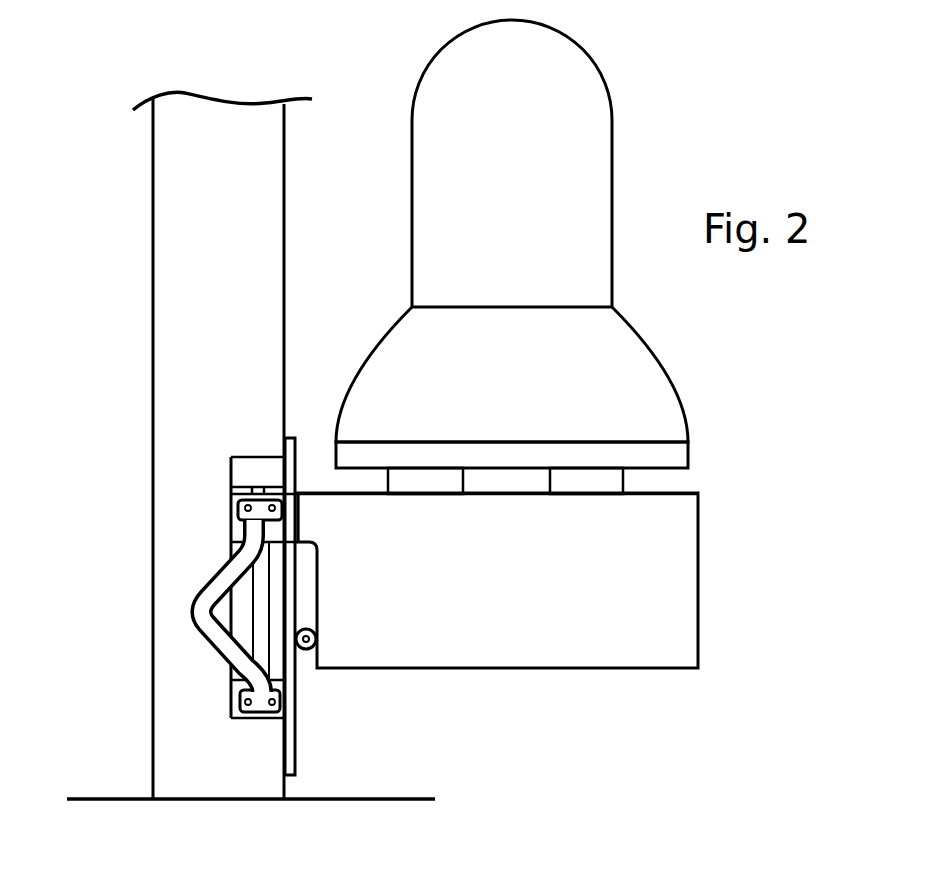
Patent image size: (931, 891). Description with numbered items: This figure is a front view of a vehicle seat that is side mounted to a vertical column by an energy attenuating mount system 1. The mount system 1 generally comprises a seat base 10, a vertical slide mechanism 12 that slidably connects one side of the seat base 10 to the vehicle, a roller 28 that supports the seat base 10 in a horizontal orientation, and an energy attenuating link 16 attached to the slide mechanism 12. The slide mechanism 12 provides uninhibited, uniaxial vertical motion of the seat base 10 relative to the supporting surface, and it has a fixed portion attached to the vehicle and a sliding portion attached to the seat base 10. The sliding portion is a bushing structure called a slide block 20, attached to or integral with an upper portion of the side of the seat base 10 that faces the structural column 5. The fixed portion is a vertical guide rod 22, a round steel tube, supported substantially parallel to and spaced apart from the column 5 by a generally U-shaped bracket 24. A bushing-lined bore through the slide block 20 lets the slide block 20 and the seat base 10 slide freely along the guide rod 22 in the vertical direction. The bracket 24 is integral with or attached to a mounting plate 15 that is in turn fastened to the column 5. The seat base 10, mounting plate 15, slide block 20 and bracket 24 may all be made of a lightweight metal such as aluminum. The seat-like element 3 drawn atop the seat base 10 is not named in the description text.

The mount system 1 is at (420, 397).
The container 3 is at (613, 175).
The structural column 5 is at (166, 212).
The seat base 10 is at (680, 571).
The vertical slide mechanism 12 is at (381, 578).
The mounting plate 15 is at (295, 740).
The energy attenuating link 16 is at (200, 630).
The slide block 20 is at (230, 525).
The vertical guide rod 22 is at (263, 582).
The U-shaped bracket 24 is at (265, 468).
The roller 28 is at (308, 628).